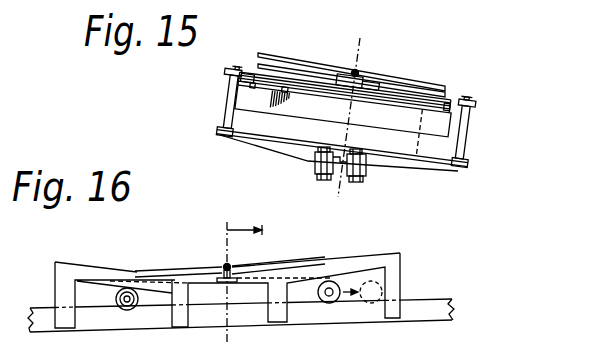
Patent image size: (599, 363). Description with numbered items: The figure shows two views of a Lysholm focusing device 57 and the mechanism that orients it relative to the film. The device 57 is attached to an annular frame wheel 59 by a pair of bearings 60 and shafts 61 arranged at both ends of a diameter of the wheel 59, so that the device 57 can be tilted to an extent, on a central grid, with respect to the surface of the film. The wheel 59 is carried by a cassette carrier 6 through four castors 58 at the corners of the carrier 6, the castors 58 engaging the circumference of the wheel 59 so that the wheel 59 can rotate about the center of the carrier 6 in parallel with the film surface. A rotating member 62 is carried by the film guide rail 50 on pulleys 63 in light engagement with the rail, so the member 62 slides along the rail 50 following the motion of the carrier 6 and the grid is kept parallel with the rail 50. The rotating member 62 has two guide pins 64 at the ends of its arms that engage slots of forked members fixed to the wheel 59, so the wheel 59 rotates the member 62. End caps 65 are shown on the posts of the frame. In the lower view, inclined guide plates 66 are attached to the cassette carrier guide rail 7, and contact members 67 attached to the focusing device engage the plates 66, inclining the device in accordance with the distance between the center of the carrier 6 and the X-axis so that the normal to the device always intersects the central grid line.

In FIG. 15, the focusing device 57 is at (289, 63).
In FIG. 15, the castors 58 is at (344, 104).
In FIG. 15, the annular frame wheel 59 is at (413, 90).
In FIG. 15, the bearings 60 is at (358, 82).
In FIG. 16, the bearings 60 is at (232, 268).
In FIG. 15, the shafts 61 is at (356, 72).
In FIG. 16, the shafts 61 is at (225, 264).
In FIG. 15, the rotating member 62 is at (341, 148).
In FIG. 15, the pulleys 63 is at (315, 160).
In FIG. 15, the guide pins 64 is at (346, 117).
In FIG. 15, the cap 65 is at (346, 116).
In FIG. 15, the film guide rail 50 is at (330, 178).
In FIG. 15, the cassette carrier 6 is at (419, 132).
In FIG. 16, the cassette carrier 6 is at (203, 292).
In FIG. 16, the inclined guide plates 66 is at (55, 270).
In FIG. 16, the contact members 67 is at (134, 270).
In FIG. 16, the cassette carrier guide rail 7 is at (369, 316).